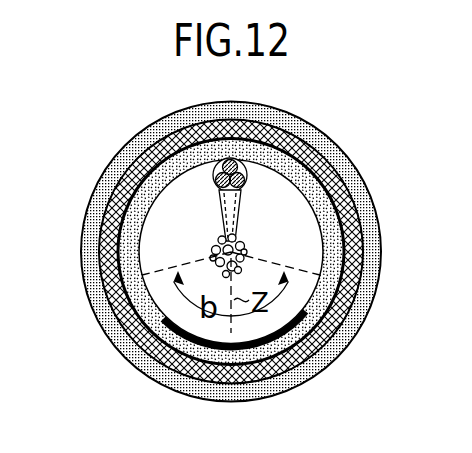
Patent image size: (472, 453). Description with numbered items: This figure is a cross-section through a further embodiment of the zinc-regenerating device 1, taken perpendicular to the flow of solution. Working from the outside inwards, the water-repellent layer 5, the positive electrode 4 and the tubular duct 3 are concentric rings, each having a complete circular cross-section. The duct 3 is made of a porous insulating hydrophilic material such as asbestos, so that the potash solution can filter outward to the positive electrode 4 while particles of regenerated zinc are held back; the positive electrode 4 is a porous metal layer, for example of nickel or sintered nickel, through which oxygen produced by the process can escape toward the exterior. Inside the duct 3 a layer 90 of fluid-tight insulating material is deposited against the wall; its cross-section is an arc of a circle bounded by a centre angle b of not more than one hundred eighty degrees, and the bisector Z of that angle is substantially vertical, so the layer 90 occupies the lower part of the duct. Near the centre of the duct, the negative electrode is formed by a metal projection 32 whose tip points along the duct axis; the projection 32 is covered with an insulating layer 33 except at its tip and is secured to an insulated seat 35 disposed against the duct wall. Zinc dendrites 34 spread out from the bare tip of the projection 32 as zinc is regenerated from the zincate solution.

The zinc-regenerating device 1 is at (357, 153).
The tubular duct 3 is at (118, 250).
The positive electrode 4 is at (107, 195).
The water-repellent layer 5 is at (117, 160).
The metal projections 32 is at (367, 201).
The insulating layer 33 is at (176, 122).
The zinc dendrites 34 is at (210, 257).
The seat 35 is at (243, 205).
The layer of fluid-tight insulating material 90 is at (284, 332).